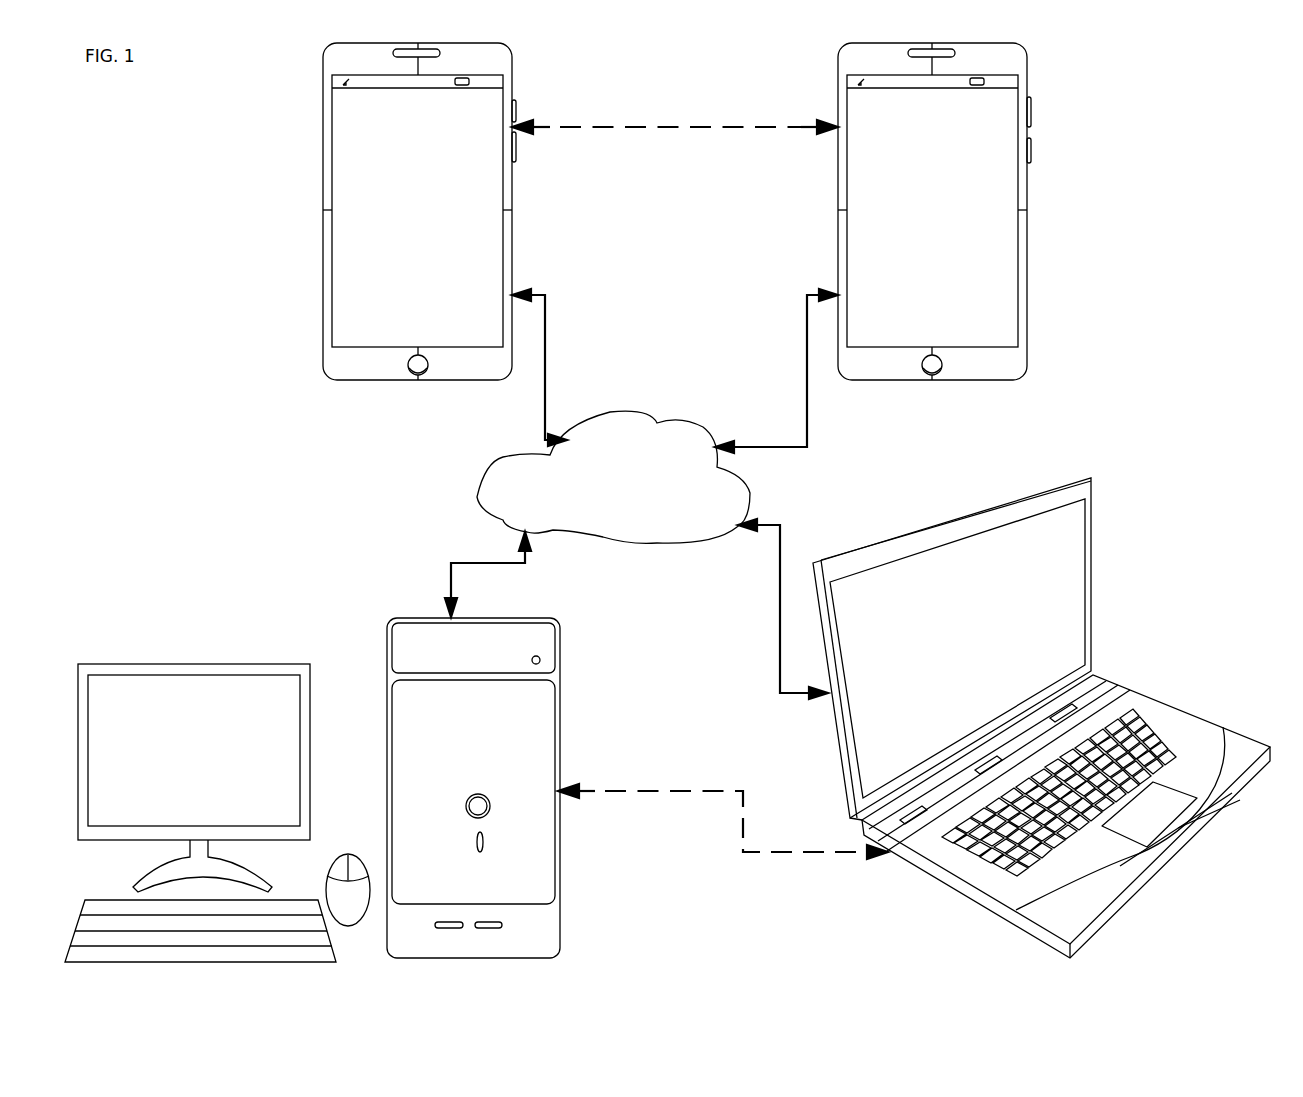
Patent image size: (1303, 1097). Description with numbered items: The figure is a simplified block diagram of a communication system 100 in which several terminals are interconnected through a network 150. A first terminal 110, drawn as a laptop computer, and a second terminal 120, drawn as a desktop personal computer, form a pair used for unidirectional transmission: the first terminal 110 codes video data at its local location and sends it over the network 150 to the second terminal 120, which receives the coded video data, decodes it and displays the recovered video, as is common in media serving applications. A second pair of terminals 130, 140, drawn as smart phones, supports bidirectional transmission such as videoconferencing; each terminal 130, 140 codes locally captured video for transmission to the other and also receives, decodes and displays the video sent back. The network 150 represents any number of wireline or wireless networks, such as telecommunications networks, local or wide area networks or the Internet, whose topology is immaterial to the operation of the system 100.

The communication system 100 is at (667, 502).
The first terminal 110 is at (1091, 562).
The second terminal 120 is at (559, 912).
The terminal 130 is at (323, 153).
The terminal 140 is at (838, 153).
The network 150 is at (613, 477).